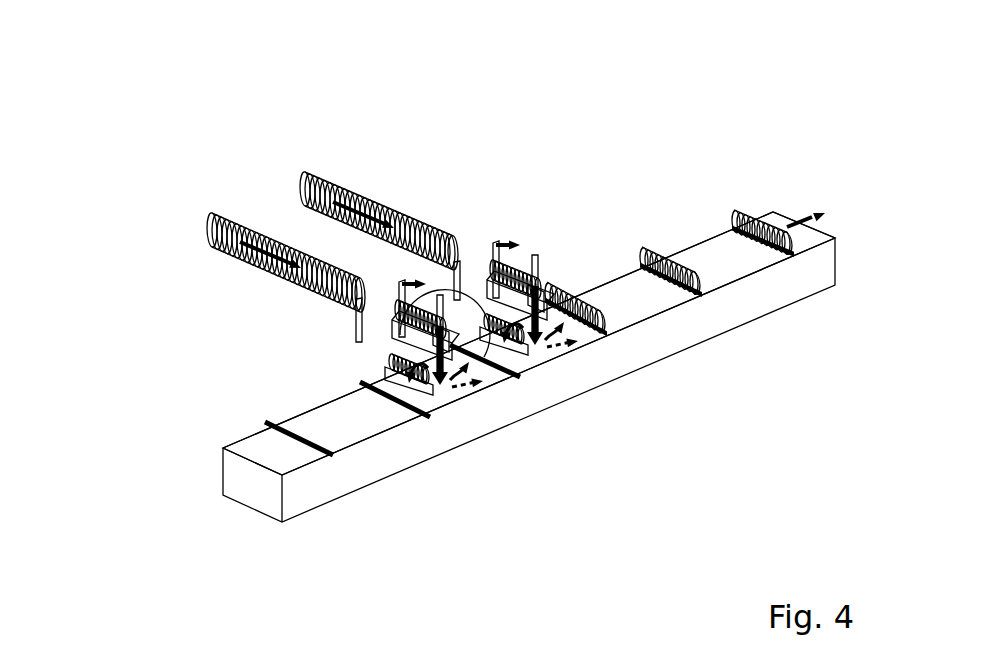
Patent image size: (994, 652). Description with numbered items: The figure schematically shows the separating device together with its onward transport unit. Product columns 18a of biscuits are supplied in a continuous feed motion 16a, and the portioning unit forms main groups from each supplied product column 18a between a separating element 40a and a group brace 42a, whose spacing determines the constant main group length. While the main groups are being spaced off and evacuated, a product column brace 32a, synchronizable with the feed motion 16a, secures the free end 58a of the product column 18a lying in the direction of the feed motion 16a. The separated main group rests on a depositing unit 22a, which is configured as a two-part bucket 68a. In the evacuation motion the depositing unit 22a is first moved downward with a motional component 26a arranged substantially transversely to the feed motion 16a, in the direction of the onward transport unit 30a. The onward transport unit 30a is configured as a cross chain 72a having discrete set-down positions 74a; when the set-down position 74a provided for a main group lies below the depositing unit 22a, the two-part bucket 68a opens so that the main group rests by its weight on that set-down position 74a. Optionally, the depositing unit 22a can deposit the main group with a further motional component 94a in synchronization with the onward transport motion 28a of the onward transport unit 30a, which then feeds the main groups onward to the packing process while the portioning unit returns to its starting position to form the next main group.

The feed motion 16a is at (250, 233).
The product column 18a is at (381, 196).
The separating element 40a is at (399, 283).
The free end 58a is at (458, 262).
The product column brace 32a is at (485, 278).
The depositing unit 22a is at (548, 304).
The motional component 26a is at (562, 296).
The cross chain 72a is at (652, 241).
The onward transport motion 28a is at (810, 205).
The onward transport unit 30a is at (640, 300).
The set-down position 74a is at (357, 420).
The further motional component 94a is at (555, 348).
The two-part bucket 68a is at (520, 370).
The group brace 42a is at (483, 320).